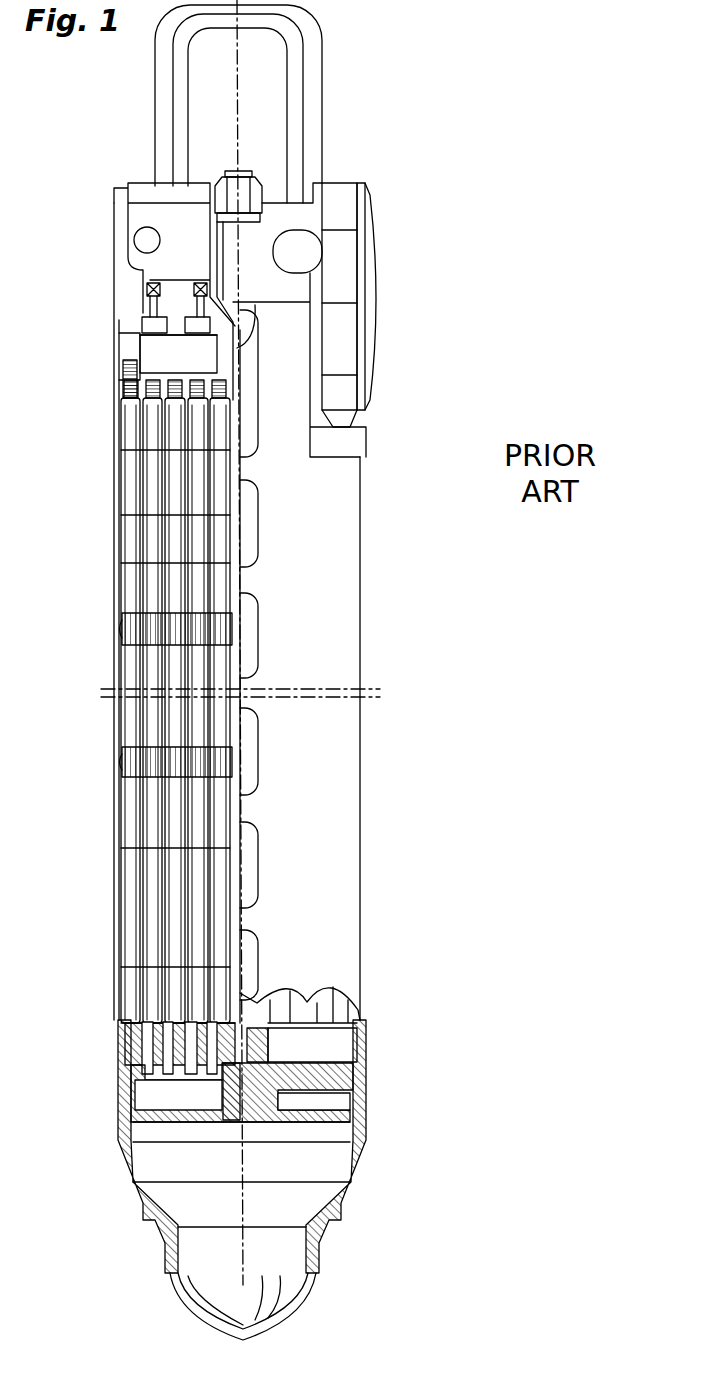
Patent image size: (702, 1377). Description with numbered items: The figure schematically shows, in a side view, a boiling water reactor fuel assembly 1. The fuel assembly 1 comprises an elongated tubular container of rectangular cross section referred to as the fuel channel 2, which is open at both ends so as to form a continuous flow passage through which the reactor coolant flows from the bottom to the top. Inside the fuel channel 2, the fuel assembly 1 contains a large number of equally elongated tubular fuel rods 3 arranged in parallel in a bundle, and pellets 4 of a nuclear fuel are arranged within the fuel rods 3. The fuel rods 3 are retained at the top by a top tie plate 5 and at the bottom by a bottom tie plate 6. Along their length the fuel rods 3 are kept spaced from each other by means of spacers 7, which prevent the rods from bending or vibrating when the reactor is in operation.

The fuel assembly 1 is at (373, 651).
The fuel channel 2 is at (362, 797).
The fuel rods 3 is at (176, 543).
The pellets 4 is at (135, 1000).
The top tie plate 5 is at (127, 350).
The bottom tie plate 6 is at (128, 1043).
The spacers 7 is at (118, 762).